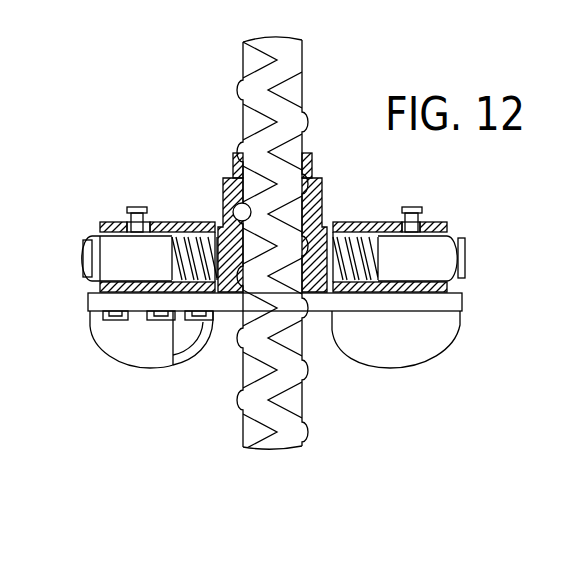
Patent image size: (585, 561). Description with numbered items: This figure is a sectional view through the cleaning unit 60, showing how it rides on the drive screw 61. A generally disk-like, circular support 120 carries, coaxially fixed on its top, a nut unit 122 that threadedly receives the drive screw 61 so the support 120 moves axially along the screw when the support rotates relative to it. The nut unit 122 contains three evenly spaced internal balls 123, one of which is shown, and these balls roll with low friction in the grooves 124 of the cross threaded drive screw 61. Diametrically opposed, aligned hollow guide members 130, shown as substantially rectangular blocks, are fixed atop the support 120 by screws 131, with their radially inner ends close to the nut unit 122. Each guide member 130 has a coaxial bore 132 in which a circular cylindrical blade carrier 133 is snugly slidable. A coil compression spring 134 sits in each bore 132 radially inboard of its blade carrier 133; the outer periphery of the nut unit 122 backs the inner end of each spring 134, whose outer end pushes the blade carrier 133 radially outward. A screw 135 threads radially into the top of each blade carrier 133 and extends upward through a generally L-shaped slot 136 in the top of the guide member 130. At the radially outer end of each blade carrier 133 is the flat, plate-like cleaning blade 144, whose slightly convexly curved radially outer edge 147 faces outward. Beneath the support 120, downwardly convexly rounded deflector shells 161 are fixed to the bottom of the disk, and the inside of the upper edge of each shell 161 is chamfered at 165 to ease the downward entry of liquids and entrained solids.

The cleaning unit 60 is at (283, 225).
The drive screw 61 is at (261, 225).
The support 120 is at (445, 303).
The nut unit 122 is at (235, 153).
The internal balls 123 is at (228, 200).
The grooves 124 is at (243, 90).
The hollow guide members 130 is at (266, 228).
The screws 131 is at (120, 320).
The bores 132 is at (404, 276).
The blade carriers 133 is at (290, 312).
The coil compression springs 134 is at (362, 293).
The screw 135 is at (142, 207).
The L-shaped slot 136 is at (103, 232).
The cleaning blade 144 is at (508, 243).
The radially outer edge 147 is at (467, 260).
The deflector shells 161 is at (245, 365).
The chamfer 165 is at (178, 320).